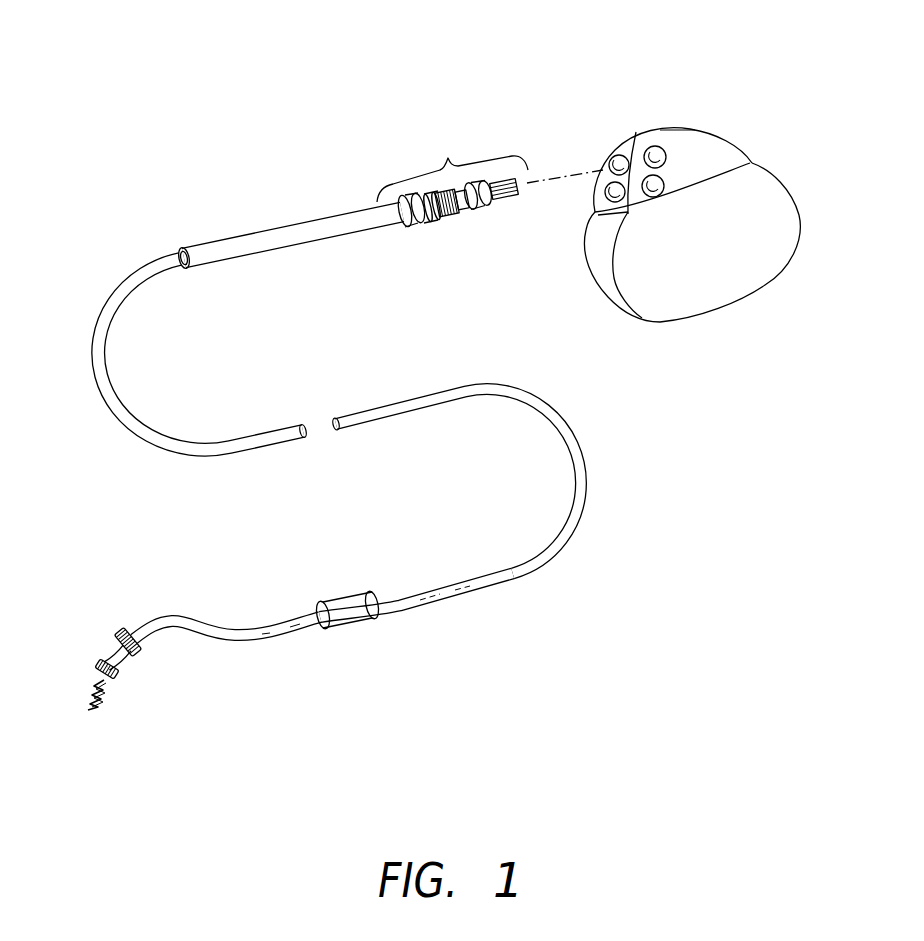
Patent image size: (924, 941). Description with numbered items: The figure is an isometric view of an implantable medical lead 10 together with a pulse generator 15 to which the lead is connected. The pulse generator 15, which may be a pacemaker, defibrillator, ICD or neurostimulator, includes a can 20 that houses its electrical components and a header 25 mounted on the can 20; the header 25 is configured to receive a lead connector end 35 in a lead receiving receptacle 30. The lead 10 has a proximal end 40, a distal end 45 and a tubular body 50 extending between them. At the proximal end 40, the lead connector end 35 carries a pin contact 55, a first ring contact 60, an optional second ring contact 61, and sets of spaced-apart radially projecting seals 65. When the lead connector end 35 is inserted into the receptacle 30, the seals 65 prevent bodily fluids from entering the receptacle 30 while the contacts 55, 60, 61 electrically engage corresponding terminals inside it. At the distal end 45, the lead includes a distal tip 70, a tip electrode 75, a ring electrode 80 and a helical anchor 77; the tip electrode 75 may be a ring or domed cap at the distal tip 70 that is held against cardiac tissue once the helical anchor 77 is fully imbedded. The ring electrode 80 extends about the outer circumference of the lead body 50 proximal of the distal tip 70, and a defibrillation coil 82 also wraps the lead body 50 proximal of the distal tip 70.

The lead 10 is at (378, 391).
The pulse generator 15 is at (728, 163).
The can 20 is at (780, 172).
The header 25 is at (707, 142).
The lead receiving receptacle 30 is at (637, 134).
The lead connector end 35 is at (465, 218).
The proximal end 40 is at (569, 135).
The distal end 45 is at (169, 653).
The tubular body 50 is at (485, 582).
The pin contact 55 is at (513, 198).
The first ring contact 60 is at (448, 214).
The second ring contact 61 is at (430, 225).
The seals 65 is at (405, 222).
The distal tip 70 is at (107, 654).
The tip electrode 75 is at (117, 672).
The helical anchor 77 is at (110, 703).
The ring electrode 80 is at (122, 628).
The defibrillation coil 82 is at (338, 625).